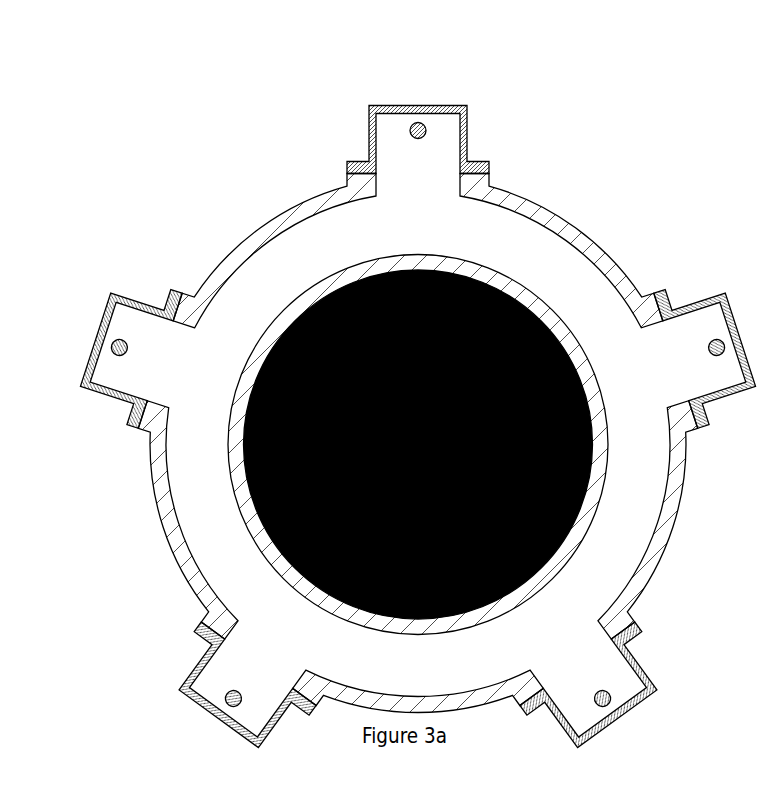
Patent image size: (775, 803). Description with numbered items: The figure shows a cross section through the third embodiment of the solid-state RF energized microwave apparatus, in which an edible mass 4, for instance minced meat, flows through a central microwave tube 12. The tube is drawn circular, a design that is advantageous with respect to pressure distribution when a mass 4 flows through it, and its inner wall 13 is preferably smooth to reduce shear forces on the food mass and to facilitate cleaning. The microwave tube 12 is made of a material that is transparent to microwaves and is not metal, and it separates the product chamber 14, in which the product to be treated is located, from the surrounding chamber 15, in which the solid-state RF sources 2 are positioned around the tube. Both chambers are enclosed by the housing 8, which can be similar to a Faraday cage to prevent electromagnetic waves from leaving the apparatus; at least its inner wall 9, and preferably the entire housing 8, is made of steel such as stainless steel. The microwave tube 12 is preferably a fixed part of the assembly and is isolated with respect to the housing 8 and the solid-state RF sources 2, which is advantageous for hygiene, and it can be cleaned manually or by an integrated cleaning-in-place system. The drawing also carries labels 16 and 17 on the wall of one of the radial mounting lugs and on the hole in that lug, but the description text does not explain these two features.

The solid-state RF source 2 is at (343, 103).
The edible mass 4 is at (340, 285).
The housing 8 is at (218, 272).
The inner wall 9 is at (263, 238).
The microwave tube 12 is at (480, 280).
The inner wall 13 is at (512, 295).
The product chamber 14 is at (540, 315).
The chamber 15 is at (600, 320).
The lug wall 16 is at (395, 107).
The bolt hole 17 is at (419, 128).